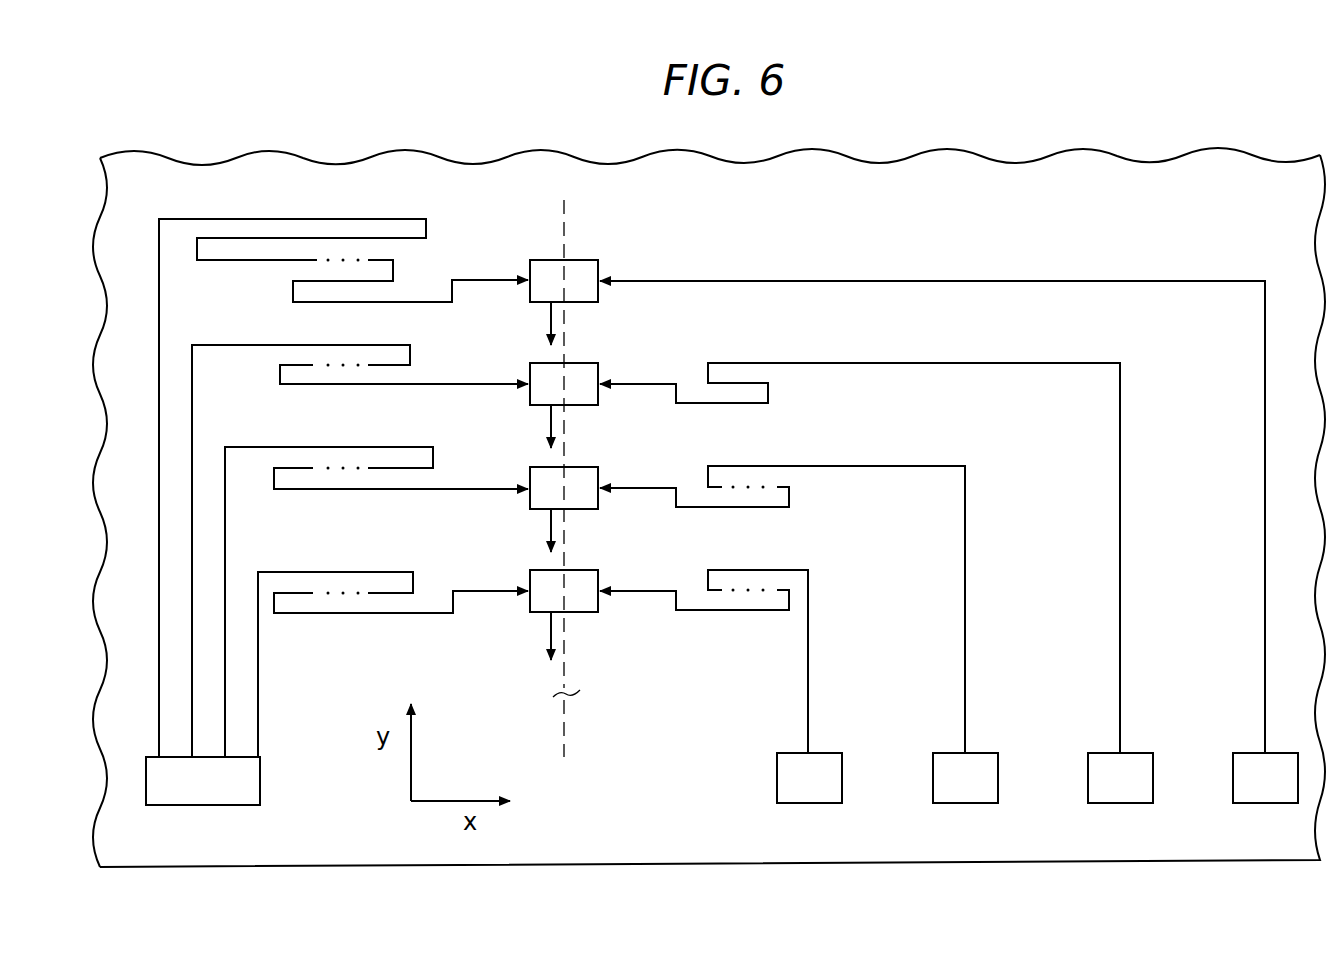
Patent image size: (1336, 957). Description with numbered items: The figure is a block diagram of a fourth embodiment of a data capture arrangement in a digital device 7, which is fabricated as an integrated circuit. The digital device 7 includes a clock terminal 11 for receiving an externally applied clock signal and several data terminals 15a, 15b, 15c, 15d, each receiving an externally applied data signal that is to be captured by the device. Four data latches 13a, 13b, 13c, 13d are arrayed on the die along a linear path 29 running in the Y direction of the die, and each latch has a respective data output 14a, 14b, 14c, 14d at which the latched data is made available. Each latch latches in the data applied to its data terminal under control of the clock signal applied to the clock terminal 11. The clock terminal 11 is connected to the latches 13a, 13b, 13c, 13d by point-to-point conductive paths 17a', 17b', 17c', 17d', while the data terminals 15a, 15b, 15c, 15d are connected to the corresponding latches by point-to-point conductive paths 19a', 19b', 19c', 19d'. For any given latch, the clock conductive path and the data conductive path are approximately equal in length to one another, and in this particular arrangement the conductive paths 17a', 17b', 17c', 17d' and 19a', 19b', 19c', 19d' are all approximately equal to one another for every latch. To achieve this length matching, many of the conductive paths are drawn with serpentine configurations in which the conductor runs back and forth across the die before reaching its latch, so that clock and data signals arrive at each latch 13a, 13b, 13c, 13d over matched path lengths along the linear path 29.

The digital device 7 is at (1120, 190).
The clock terminal 11 is at (258, 774).
The data latch 13a is at (597, 570).
The data latch 13b is at (597, 467).
The data latch 13c is at (597, 363).
The data latch 13d is at (597, 260).
The data output 14a is at (551, 630).
The data output 14b is at (551, 525).
The data output 14c is at (551, 420).
The data output 14d is at (551, 324).
The data terminal 15a is at (809, 805).
The data terminal 15b is at (965, 805).
The data terminal 15c is at (1120, 805).
The data terminal 15d is at (1265, 805).
The conductive path 17a' is at (393, 664).
The conductive path 17b' is at (376, 602).
The conductive path 17c' is at (360, 551).
The conductive path 17d' is at (343, 488).
The conductive path 19a' is at (732, 661).
The conductive path 19b' is at (809, 609).
The conductive path 19c' is at (885, 558).
The conductive path 19d' is at (958, 517).
The linear path 29 is at (566, 732).